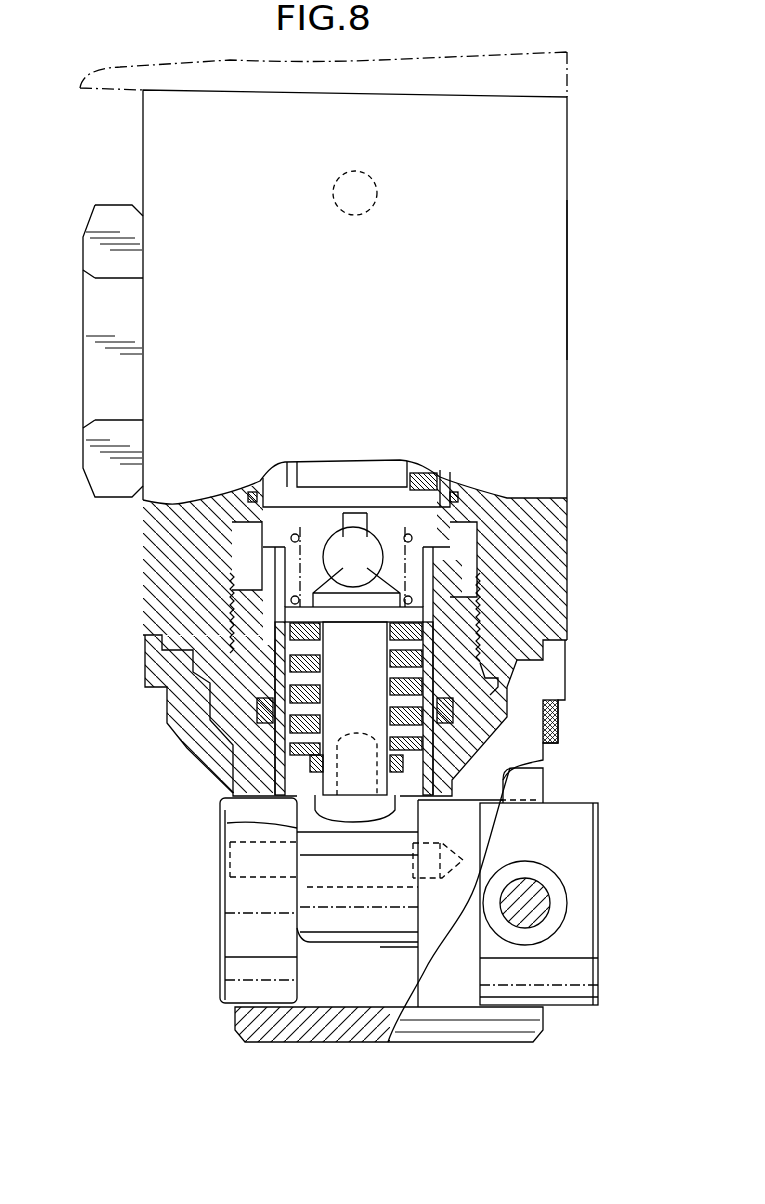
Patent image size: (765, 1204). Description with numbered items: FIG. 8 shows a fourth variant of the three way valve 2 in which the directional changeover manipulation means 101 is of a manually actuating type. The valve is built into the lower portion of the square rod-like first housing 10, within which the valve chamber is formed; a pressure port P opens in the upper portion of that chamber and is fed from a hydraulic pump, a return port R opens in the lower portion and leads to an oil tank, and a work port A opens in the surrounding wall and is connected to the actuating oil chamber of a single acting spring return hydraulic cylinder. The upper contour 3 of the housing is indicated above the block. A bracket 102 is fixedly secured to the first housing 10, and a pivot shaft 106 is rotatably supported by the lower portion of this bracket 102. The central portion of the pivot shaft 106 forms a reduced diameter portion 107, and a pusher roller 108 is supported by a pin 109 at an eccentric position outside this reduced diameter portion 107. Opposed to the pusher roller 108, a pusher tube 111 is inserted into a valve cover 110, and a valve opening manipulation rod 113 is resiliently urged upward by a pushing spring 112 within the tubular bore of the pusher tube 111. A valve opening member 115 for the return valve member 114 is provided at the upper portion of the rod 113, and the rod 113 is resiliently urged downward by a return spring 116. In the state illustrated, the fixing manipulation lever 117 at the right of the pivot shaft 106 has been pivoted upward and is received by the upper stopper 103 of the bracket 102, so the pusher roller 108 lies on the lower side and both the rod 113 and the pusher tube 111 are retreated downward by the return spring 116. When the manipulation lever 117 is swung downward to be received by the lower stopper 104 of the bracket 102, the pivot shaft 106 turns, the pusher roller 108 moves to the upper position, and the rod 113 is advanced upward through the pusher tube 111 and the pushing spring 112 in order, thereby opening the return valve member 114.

The three way valve 2 is at (573, 210).
The upper contour of housing 3 is at (571, 85).
The first housing 10 is at (570, 283).
The pressure port P is at (372, 180).
The work port A is at (83, 370).
The return port R is at (325, 553).
The directional changeover manipulation means 101 is at (207, 903).
The bracket 102 is at (568, 683).
The upper stopper 103 is at (523, 848).
The lower stopper 104 is at (537, 1032).
The pivot shaft 106 is at (602, 945).
The reduced diameter portion 107 is at (335, 937).
The pusher roller 108 is at (300, 828).
The pin 109 is at (218, 867).
The valve cover 110 is at (210, 708).
The pusher tube 111 is at (283, 763).
The pushing spring 112 is at (297, 723).
The valve opening manipulation rod 113 is at (330, 650).
The return valve member 114 is at (373, 470).
The valve opening member 115 is at (333, 530).
The return spring 116 is at (375, 565).
The fixing manipulation lever 117 is at (550, 903).